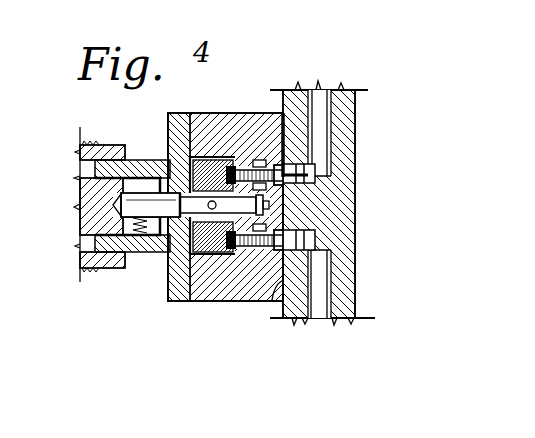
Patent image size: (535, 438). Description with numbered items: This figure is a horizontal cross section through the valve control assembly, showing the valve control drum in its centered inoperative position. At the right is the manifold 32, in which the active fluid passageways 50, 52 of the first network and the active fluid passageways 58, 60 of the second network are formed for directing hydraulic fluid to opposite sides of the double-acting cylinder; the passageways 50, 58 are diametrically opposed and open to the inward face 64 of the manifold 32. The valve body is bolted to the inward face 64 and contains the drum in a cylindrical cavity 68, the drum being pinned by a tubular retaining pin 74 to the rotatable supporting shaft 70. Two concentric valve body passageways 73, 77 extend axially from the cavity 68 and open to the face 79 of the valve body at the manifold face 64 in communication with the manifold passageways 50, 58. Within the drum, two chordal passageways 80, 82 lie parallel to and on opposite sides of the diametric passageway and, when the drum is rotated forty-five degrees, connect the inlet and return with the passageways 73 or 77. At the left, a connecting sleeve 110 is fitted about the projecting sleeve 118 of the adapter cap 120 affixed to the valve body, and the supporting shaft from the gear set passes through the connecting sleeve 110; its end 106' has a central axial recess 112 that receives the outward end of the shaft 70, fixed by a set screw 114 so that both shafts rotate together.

The manifold 32 is at (357, 207).
The active fluid passageway 50 is at (308, 179).
The active fluid passageway 52 is at (320, 100).
The active fluid passageway 58 is at (335, 241).
The active fluid passageway 60 is at (318, 320).
The inward face 64 is at (281, 112).
The cylindrical cavity 68 is at (213, 160).
The rotatable supporting shaft 70 is at (163, 253).
The valve body passageway 73 is at (215, 302).
The tubular retaining pin 74 is at (172, 148).
The valve body passageway 77 is at (258, 160).
The face of the valve body 79 is at (280, 285).
The chordal passageway 80 is at (186, 130).
The chordal passageway 82 is at (168, 288).
The end of supporting shaft 106' is at (102, 206).
The connecting sleeve 110 is at (80, 150).
The central axial recess 112 is at (113, 205).
The set screw 114 is at (140, 257).
The projecting sleeve 118 is at (132, 153).
The adapter cap 120 is at (192, 130).